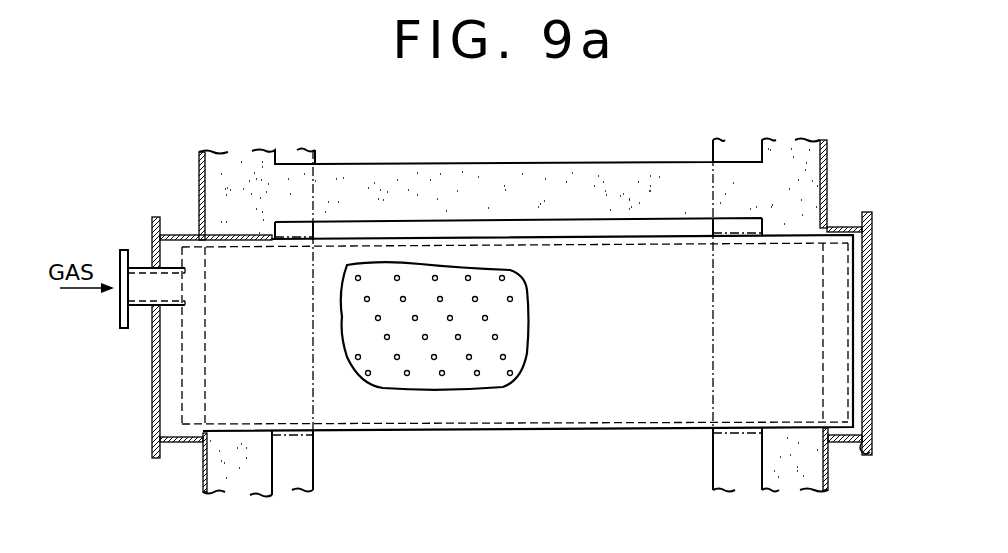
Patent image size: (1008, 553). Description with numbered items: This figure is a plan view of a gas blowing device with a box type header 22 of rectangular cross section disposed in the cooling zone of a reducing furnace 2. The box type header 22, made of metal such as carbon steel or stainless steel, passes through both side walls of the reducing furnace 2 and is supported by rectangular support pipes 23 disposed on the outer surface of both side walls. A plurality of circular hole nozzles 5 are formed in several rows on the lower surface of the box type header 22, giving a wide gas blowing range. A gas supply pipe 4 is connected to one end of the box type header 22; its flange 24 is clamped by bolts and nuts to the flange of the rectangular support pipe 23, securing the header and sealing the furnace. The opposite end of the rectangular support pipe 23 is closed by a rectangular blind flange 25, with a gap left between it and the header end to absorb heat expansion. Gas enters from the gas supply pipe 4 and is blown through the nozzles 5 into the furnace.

The reducing furnace 2 is at (842, 160).
The gas supply pipe 4 is at (122, 329).
The circular hole nozzles 5 is at (477, 376).
The box type header 22 is at (395, 431).
The rectangular support pipes 23 is at (180, 443).
The flange 24 is at (155, 445).
The rectangular blind flange 25 is at (873, 421).